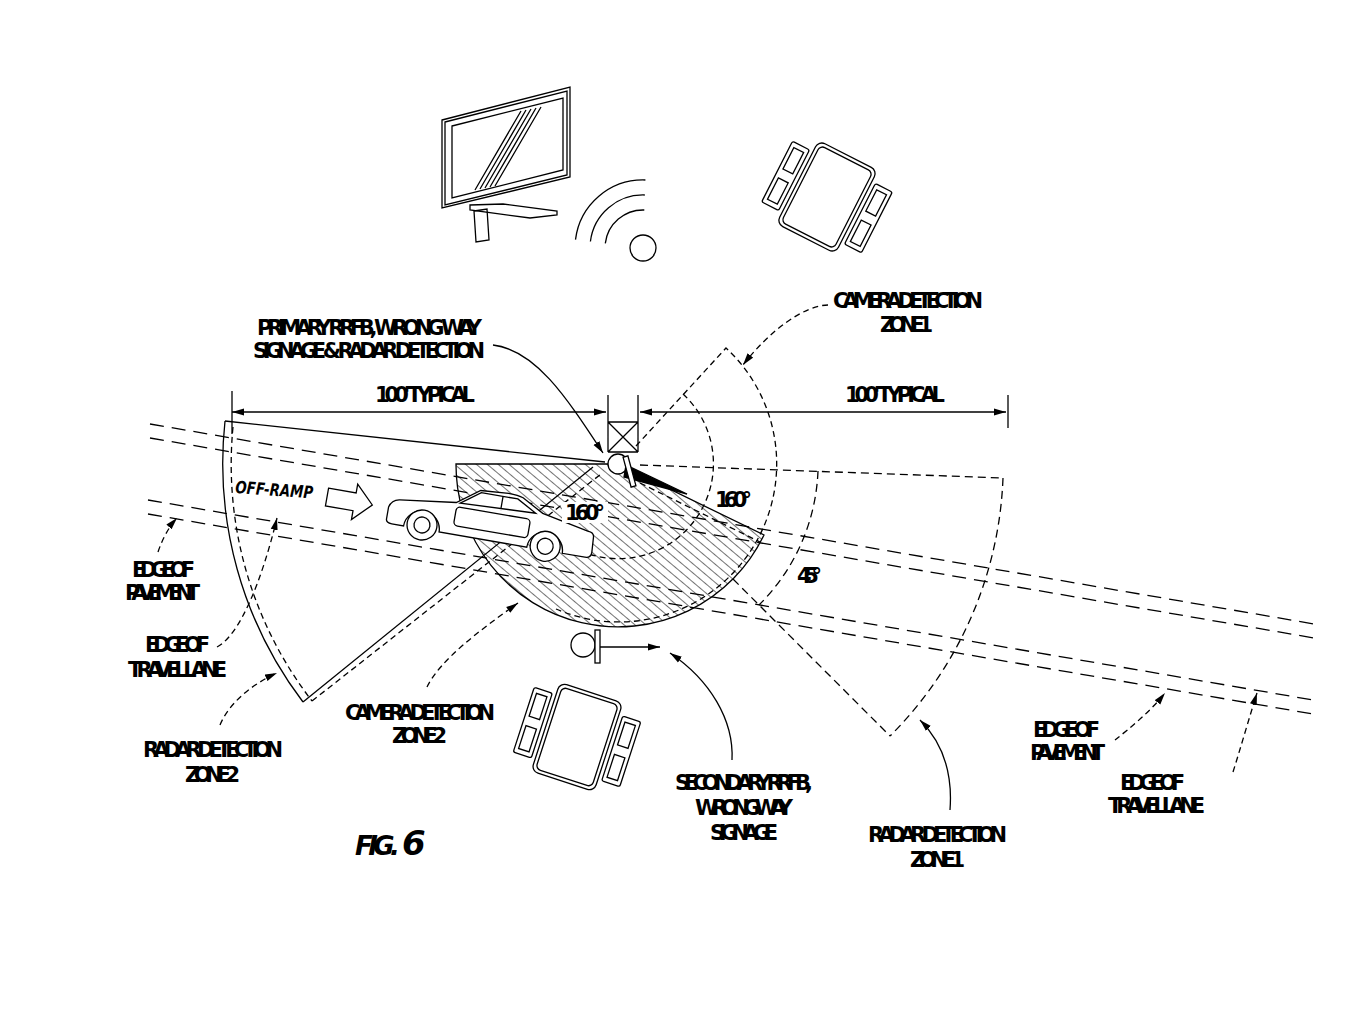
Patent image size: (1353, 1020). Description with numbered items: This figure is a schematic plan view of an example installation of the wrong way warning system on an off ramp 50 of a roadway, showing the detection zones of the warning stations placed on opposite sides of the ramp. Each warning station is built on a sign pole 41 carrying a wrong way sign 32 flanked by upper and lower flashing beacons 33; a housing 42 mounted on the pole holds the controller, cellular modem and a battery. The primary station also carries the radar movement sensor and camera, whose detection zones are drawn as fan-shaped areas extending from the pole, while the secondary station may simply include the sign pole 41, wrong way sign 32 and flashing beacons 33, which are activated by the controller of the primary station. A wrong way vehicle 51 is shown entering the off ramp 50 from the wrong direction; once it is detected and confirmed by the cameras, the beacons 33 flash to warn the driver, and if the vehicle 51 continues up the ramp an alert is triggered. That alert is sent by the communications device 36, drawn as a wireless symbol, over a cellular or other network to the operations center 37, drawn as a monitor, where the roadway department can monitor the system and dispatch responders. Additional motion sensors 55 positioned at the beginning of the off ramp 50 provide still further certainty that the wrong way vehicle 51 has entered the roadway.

The wrong way sign 32 is at (797, 237).
The flashing beacons 33 is at (892, 180).
The communications device 36 is at (645, 242).
The operations center 37 is at (453, 152).
The sign pole 41 is at (597, 455).
The housing 42 is at (623, 422).
The off ramp 50 is at (183, 453).
The wrong way vehicle 51 is at (440, 497).
The additional motion sensors 55 is at (707, 590).